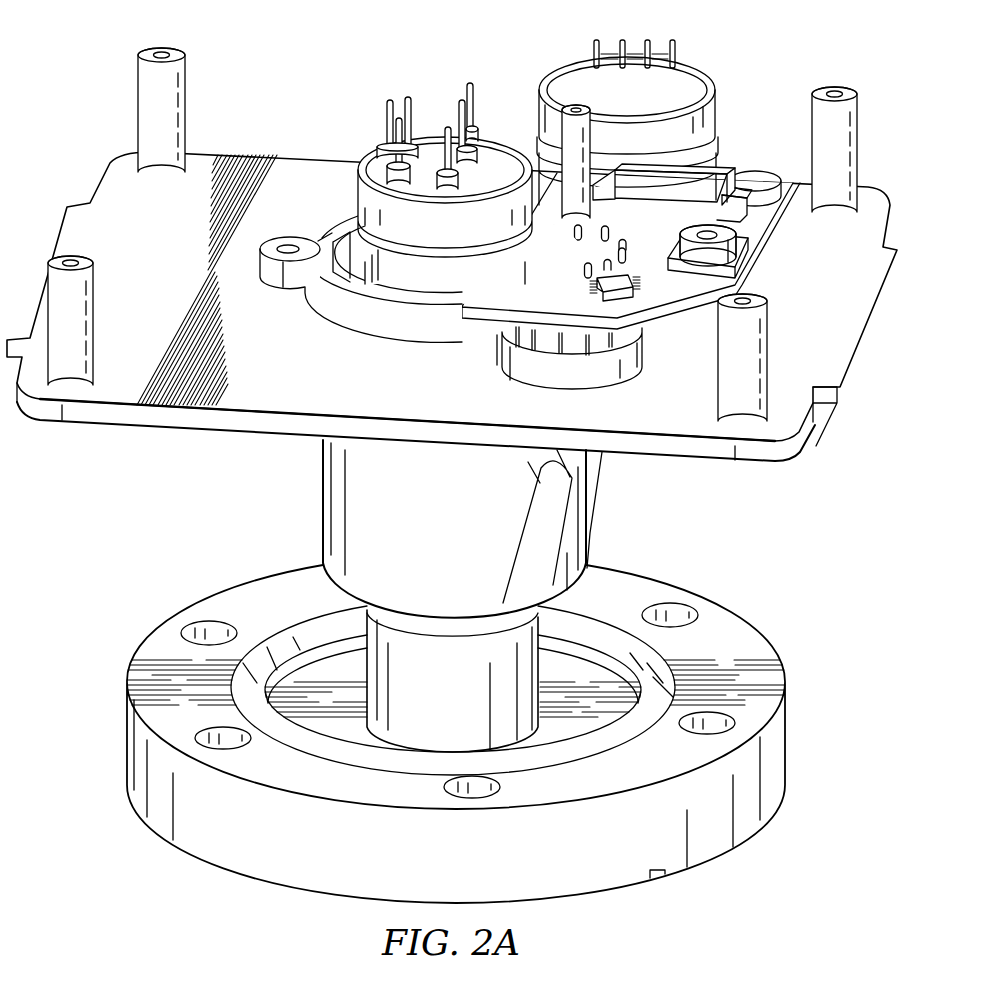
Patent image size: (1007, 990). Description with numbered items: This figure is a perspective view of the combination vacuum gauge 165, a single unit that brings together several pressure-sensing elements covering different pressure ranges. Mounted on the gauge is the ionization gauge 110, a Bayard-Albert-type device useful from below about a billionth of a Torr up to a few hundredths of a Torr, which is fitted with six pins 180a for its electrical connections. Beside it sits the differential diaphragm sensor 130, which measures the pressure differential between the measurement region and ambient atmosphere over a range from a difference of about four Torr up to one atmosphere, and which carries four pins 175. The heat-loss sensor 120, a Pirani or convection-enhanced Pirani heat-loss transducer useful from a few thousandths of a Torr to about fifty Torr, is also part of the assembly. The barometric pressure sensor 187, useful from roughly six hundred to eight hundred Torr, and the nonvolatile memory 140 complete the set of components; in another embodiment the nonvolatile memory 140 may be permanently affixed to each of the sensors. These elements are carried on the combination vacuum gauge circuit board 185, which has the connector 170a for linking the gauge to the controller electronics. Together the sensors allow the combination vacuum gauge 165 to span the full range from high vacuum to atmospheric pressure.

The combination vacuum gauge 165 is at (116, 92).
The pins 180a is at (385, 112).
The ionization gauge 110 is at (358, 196).
The differential diaphragm sensor 130 is at (540, 99).
The pins 175 is at (592, 46).
The connector 170a is at (714, 173).
The combination vacuum gauge circuit board 185 is at (763, 224).
The barometric pressure sensor 187 is at (733, 250).
The nonvolatile memory 140 is at (638, 276).
The heat-loss sensor 120 is at (518, 336).